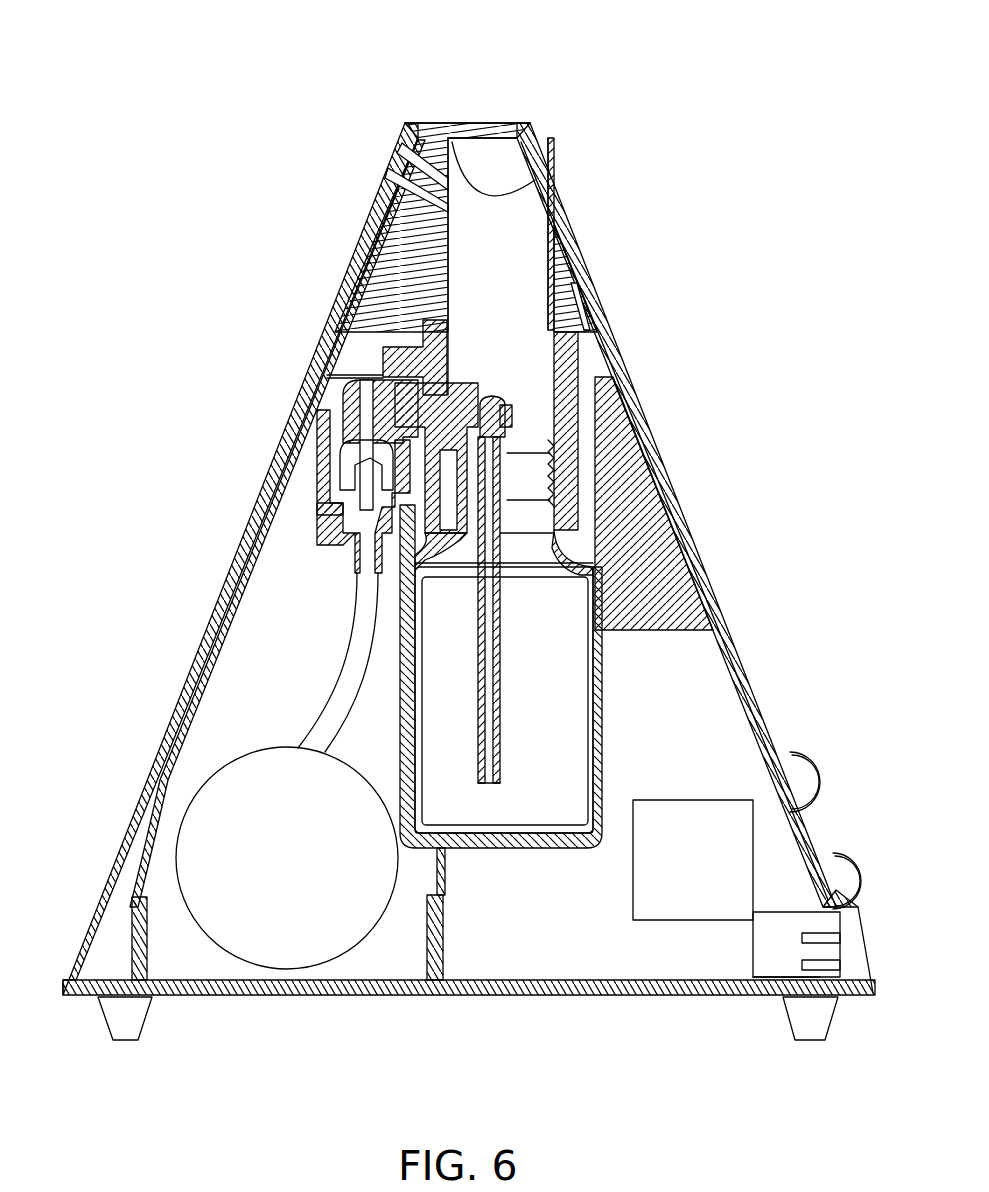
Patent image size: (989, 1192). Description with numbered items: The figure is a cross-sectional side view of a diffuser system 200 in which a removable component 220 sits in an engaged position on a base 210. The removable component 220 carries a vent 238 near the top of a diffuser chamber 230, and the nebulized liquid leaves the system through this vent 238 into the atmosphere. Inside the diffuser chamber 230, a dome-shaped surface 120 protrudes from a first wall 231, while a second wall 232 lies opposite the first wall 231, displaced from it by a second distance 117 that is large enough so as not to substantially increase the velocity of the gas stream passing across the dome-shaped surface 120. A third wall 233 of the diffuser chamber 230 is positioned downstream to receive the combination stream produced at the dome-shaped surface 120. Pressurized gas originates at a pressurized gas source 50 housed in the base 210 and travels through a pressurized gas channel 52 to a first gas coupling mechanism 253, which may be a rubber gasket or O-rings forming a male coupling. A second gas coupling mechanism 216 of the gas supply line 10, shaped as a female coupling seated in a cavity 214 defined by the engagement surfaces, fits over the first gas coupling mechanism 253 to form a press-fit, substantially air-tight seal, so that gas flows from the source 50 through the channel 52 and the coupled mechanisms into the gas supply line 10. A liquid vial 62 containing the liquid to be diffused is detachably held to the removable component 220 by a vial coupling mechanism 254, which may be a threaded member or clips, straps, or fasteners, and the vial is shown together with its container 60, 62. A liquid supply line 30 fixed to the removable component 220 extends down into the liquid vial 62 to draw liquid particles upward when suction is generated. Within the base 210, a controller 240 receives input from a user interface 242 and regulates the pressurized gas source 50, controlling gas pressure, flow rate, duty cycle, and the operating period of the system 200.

The diffuser system 200 is at (176, 60).
The base 210 is at (48, 968).
The vent 238 is at (393, 137).
The second wall 232 is at (513, 150).
The second distance 117 is at (490, 223).
The diffuser chamber 230 is at (488, 140).
The removable component 220 is at (515, 449).
The gas supply line 10 is at (410, 387).
The first gas coupling mechanism 253 is at (345, 437).
The cavity 214 is at (350, 441).
The second gas coupling mechanism 216 is at (338, 460).
The dome-shaped surface 120 is at (500, 395).
The first wall 231 is at (498, 405).
The third wall 233 is at (558, 345).
The vial coupling mechanism 254 is at (643, 453).
The liquid supply line 30 is at (600, 600).
The container 60 is at (504, 698).
The liquid vial 62 is at (504, 698).
The pressurized gas channel 52 is at (338, 662).
The pressurized gas source 50 is at (287, 858).
The controller 240 is at (693, 860).
The user interface 242 is at (845, 770).